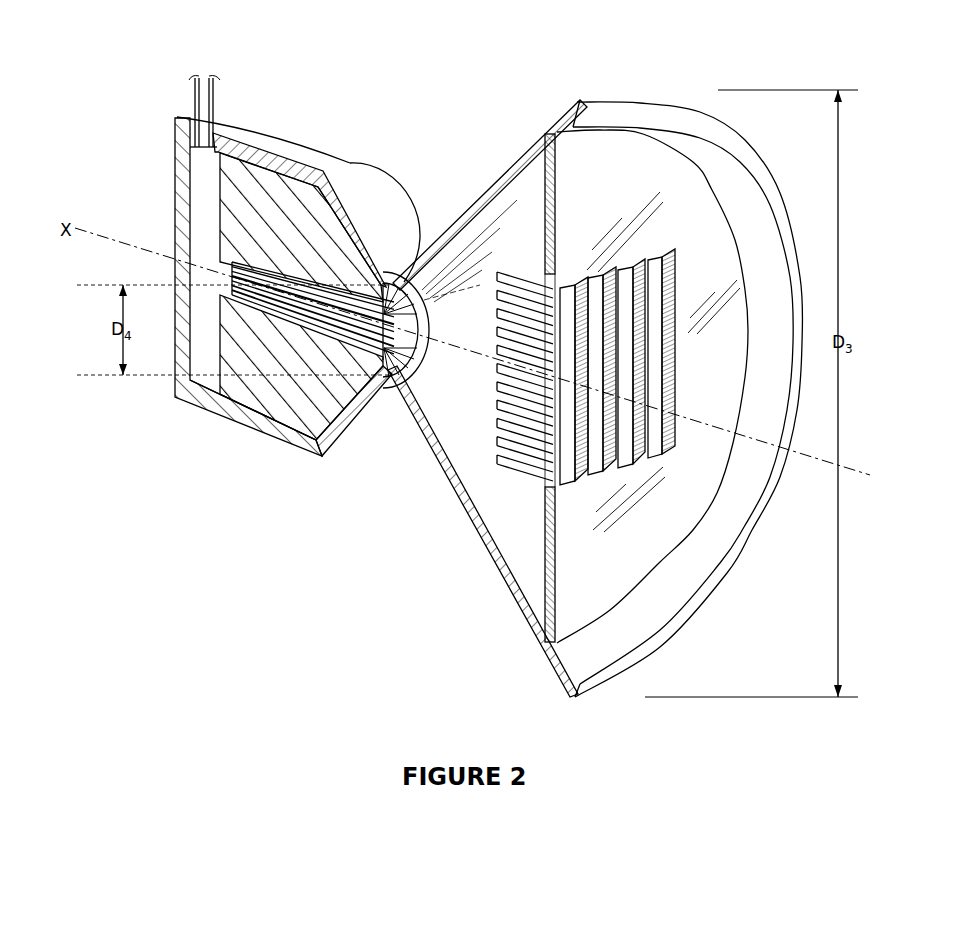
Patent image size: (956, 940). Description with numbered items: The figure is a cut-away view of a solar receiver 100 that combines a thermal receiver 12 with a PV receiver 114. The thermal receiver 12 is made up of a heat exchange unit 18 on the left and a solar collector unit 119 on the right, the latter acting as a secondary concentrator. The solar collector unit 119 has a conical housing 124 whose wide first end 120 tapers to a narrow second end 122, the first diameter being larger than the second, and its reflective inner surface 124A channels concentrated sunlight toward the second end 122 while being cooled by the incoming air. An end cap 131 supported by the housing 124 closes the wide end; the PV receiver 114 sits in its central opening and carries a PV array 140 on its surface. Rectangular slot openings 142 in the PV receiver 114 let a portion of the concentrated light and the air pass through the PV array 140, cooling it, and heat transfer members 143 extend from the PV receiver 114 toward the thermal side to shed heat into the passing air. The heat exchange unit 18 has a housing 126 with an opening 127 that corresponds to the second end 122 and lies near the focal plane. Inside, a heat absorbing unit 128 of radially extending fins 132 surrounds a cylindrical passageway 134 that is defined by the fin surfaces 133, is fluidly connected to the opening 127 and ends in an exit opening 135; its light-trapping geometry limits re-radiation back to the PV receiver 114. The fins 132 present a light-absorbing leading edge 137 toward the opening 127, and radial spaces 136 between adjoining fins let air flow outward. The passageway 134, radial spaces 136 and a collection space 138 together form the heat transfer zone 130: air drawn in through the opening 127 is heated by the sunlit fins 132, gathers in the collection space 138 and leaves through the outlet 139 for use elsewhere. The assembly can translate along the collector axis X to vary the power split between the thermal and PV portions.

The solar receiver 100 is at (731, 58).
The thermal receiver 12 is at (466, 139).
The heat exchange unit 18 is at (336, 456).
The PV receiver 114 is at (658, 304).
The solar collector unit 119 is at (453, 500).
The first end 120 is at (649, 101).
The second end 122 is at (424, 246).
The housing 124 is at (478, 523).
The inner surface 124A is at (492, 567).
The housing 126 is at (322, 151).
The opening 127 is at (409, 375).
The heat absorbing unit 128 is at (273, 418).
The heat transfer zone 130 is at (206, 180).
The end cap 131 is at (691, 199).
The fins 132 is at (221, 231).
The fin surfaces 133 is at (342, 316).
The passageway 134 is at (286, 309).
The exit opening 135 is at (231, 289).
The radial spaces 136 is at (258, 304).
The leading edge 137 is at (396, 386).
The collection space 138 is at (201, 365).
The outlet 139 is at (194, 87).
The PV array 140 is at (667, 440).
The openings 142 is at (667, 383).
The heat transfer members 143 is at (497, 420).